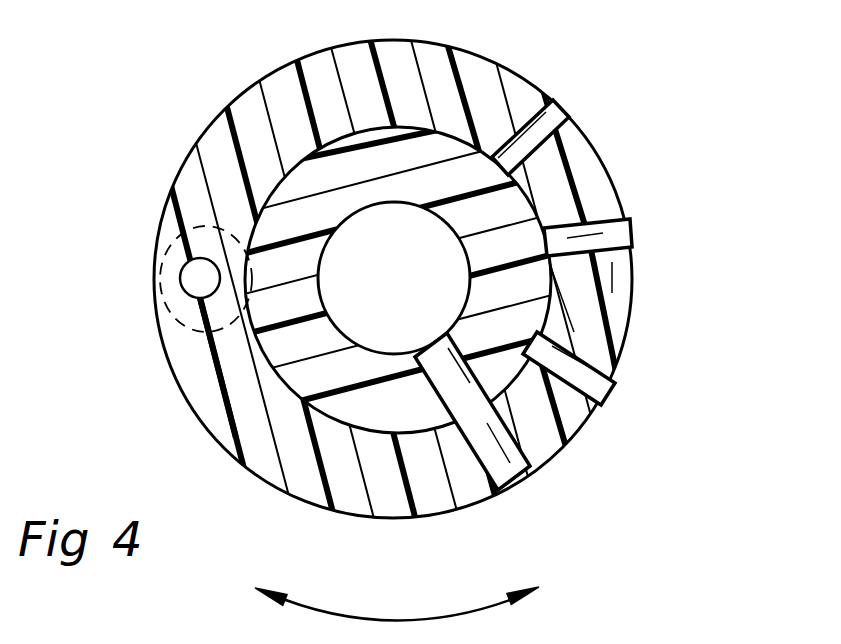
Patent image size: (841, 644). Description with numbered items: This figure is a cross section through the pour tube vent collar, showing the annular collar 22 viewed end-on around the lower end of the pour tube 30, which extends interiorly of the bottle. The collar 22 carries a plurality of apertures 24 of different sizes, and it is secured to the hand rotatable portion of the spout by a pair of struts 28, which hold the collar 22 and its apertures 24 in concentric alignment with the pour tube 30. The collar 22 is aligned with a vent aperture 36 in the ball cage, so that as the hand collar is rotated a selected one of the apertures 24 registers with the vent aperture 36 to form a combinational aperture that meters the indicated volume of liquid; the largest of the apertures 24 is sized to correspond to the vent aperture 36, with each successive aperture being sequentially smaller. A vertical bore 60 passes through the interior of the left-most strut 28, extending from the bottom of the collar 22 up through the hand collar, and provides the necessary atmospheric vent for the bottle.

The annular collar 22 is at (296, 61).
The pour tube 30 is at (289, 193).
The apertures 24 is at (555, 99).
The struts 28 is at (212, 355).
The vent aperture 36 is at (432, 352).
The vertical bore 60 is at (196, 277).